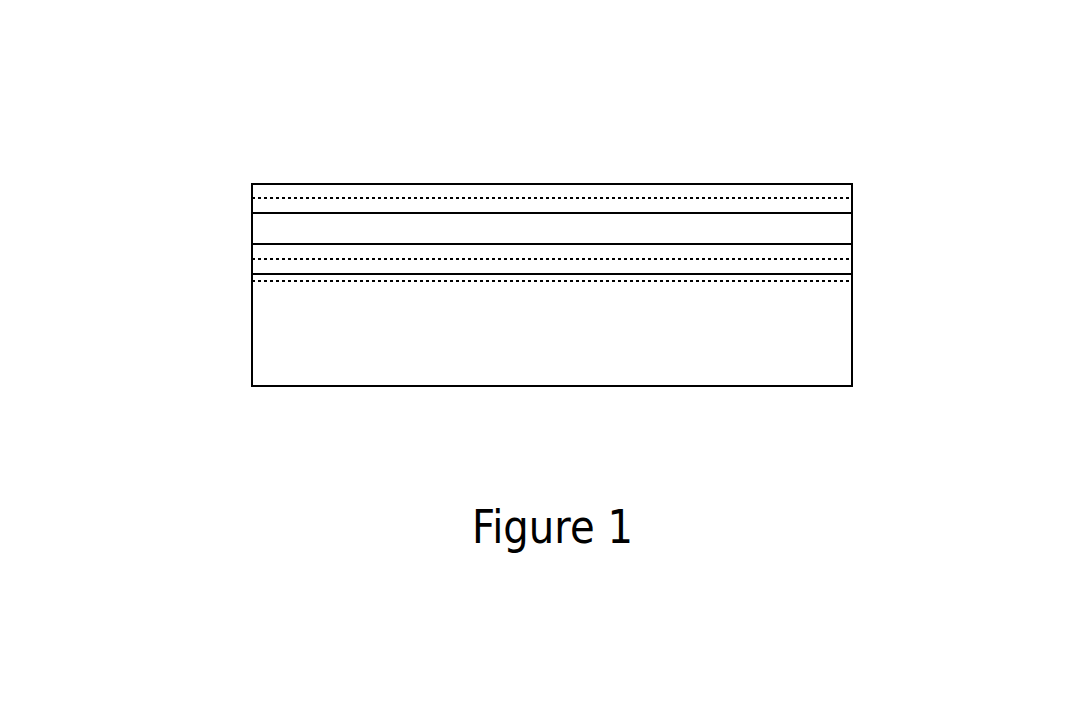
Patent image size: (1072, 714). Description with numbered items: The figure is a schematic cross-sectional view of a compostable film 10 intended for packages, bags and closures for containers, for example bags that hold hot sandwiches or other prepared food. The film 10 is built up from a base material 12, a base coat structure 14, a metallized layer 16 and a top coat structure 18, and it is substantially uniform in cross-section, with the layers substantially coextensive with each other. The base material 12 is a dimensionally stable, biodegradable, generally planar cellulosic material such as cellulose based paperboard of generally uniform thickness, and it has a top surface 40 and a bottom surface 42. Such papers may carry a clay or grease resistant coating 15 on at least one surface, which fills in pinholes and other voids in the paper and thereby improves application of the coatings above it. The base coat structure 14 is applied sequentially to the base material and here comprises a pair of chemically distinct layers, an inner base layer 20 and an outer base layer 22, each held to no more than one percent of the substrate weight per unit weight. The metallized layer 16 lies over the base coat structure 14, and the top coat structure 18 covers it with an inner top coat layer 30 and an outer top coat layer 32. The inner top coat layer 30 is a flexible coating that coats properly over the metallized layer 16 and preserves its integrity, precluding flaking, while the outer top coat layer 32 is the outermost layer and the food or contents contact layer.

The compostable film 10 is at (534, 86).
The base material 12 is at (867, 327).
The base coat structure 14 is at (877, 258).
The grease resistant coating 15 is at (240, 278).
The metallized layer 16 is at (867, 229).
The top coat structure 18 is at (873, 198).
The inner base layer 20 is at (240, 261).
The outer base layer 22 is at (240, 247).
The inner top coat layer 30 is at (240, 205).
The outer top coat layer 32 is at (240, 191).
The top surface 40 is at (784, 284).
The bottom surface 42 is at (344, 400).